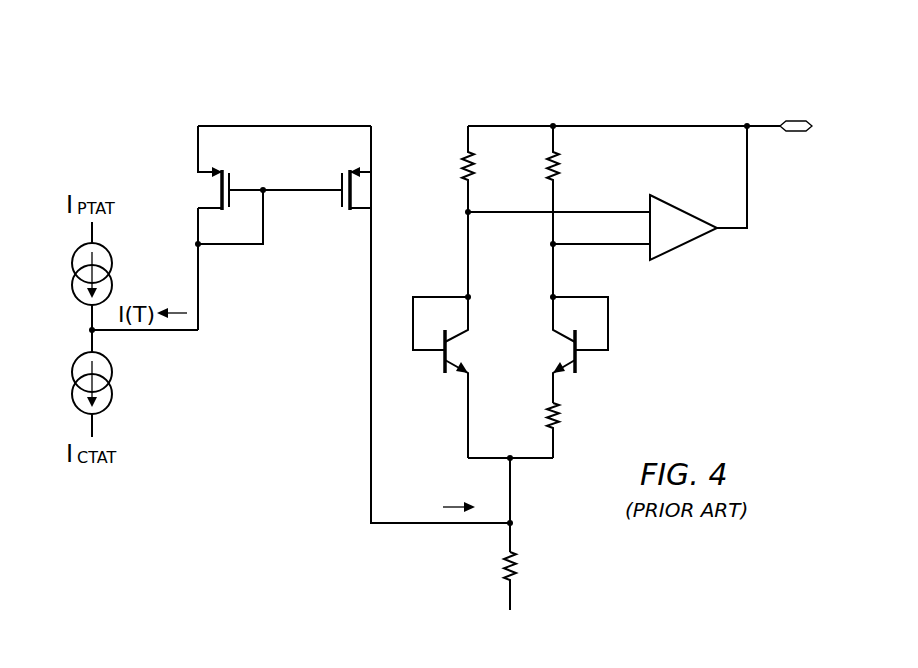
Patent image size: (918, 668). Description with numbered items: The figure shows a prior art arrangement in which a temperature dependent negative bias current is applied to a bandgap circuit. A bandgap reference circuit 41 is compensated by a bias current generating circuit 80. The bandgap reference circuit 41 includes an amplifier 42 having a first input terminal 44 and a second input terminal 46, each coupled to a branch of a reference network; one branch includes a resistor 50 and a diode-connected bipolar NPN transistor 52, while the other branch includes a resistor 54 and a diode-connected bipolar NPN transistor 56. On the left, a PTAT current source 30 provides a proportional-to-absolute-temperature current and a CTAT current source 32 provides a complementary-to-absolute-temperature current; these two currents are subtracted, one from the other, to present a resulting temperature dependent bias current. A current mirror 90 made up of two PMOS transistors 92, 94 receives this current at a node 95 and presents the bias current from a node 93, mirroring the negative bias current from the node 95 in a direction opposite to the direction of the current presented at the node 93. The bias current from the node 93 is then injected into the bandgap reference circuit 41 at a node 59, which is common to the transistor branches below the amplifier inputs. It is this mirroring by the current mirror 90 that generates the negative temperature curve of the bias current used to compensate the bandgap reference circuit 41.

The bias current generating circuit 80 is at (627, 316).
The PTAT current source 30 is at (71, 263).
The CTAT current source 32 is at (71, 396).
The current mirror 90 is at (345, 324).
The PMOS transistor 94 is at (229, 180).
The PMOS transistor 92 is at (340, 200).
The node 95 is at (205, 250).
The node 93 is at (370, 373).
The resistor 50 is at (462, 166).
The resistor 54 is at (560, 170).
The first input terminal 44 is at (512, 213).
The second input terminal 46 is at (623, 245).
The amplifier 42 is at (684, 207).
The bandgap reference circuit 41 is at (696, 277).
The diode-connected transistor 52 is at (443, 357).
The diode-connected transistor 56 is at (578, 357).
The node 59 is at (505, 528).